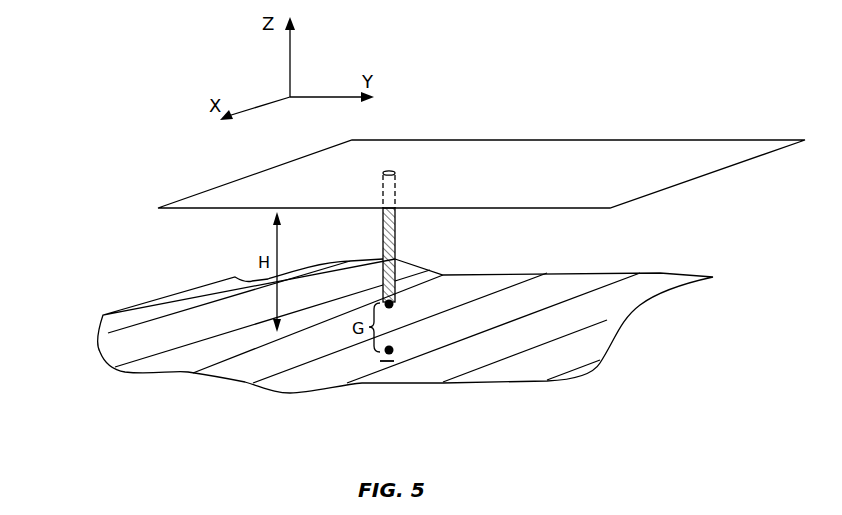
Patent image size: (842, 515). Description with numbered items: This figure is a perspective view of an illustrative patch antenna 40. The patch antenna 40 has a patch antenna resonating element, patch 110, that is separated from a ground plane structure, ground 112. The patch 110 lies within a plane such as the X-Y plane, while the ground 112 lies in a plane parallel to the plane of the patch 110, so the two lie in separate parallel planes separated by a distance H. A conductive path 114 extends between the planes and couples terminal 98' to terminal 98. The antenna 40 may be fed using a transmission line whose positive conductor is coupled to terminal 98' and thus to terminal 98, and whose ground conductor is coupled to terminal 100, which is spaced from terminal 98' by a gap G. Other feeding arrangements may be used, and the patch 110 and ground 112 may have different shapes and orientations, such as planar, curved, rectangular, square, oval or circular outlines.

The patch antenna 40 is at (65, 88).
The terminal 98 is at (428, 158).
The terminal 98' is at (422, 313).
The terminal 100 is at (393, 350).
The patch antenna resonating element 110 is at (747, 140).
The ground 112 is at (668, 271).
The conductive path 114 is at (396, 227).